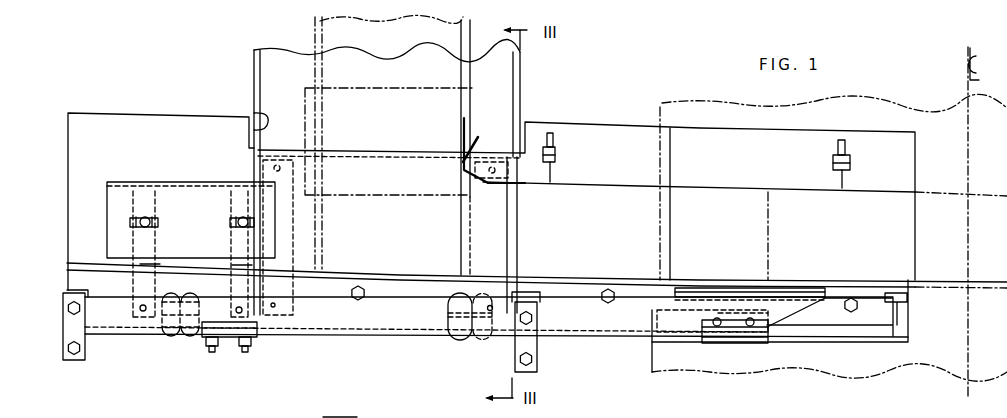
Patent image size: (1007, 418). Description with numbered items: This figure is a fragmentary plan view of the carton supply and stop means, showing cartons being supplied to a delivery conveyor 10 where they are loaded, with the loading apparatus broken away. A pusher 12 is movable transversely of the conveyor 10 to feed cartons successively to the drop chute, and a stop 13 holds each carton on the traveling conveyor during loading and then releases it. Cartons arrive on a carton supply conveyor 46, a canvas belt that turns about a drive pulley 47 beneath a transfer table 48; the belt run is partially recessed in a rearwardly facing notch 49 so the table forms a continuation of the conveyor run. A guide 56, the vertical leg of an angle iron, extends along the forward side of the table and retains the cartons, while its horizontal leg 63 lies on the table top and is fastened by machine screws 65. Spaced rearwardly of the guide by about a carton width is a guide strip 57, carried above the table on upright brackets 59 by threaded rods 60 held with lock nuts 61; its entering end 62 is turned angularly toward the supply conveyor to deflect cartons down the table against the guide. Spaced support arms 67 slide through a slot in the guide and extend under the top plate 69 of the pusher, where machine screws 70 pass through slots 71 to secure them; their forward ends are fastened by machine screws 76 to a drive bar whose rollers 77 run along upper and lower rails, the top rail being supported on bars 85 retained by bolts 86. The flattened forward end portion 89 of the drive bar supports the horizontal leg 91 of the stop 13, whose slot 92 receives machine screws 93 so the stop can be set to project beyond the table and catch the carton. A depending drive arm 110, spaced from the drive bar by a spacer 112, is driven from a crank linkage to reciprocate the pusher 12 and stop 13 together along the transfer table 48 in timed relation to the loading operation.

The delivery conveyor 10 is at (682, 358).
The pusher 12 is at (142, 176).
The stop 13 is at (806, 318).
The carton supply conveyor 46 is at (317, 33).
The drive pulley 47 is at (405, 90).
The transfer table 48 is at (193, 123).
The rearwardly facing notch 49 is at (255, 113).
The guide 56 is at (558, 278).
The guide strip 57 is at (580, 187).
The upright brackets 59 is at (557, 156).
The threaded rods 60 is at (554, 138).
The lock nuts 61 is at (546, 150).
The turned entering end of guide strip 62 is at (466, 118).
The horizontal leg 63 is at (417, 297).
The machine screws 65 is at (357, 300).
The support arms 67 is at (145, 264).
The top plate 69 is at (113, 208).
The machine screws 70 is at (147, 216).
The slots 71 is at (157, 213).
The machine screws 76 is at (142, 312).
The rollers 77 is at (168, 338).
The bars 85 is at (72, 333).
The bolt 86 is at (77, 355).
The flattened forward end portion 89 is at (655, 333).
The horizontal leg 91 is at (777, 313).
The slot 92 is at (732, 328).
The machine screws 93 is at (715, 327).
The drive arm 110 is at (263, 353).
The spacer 112 is at (258, 338).